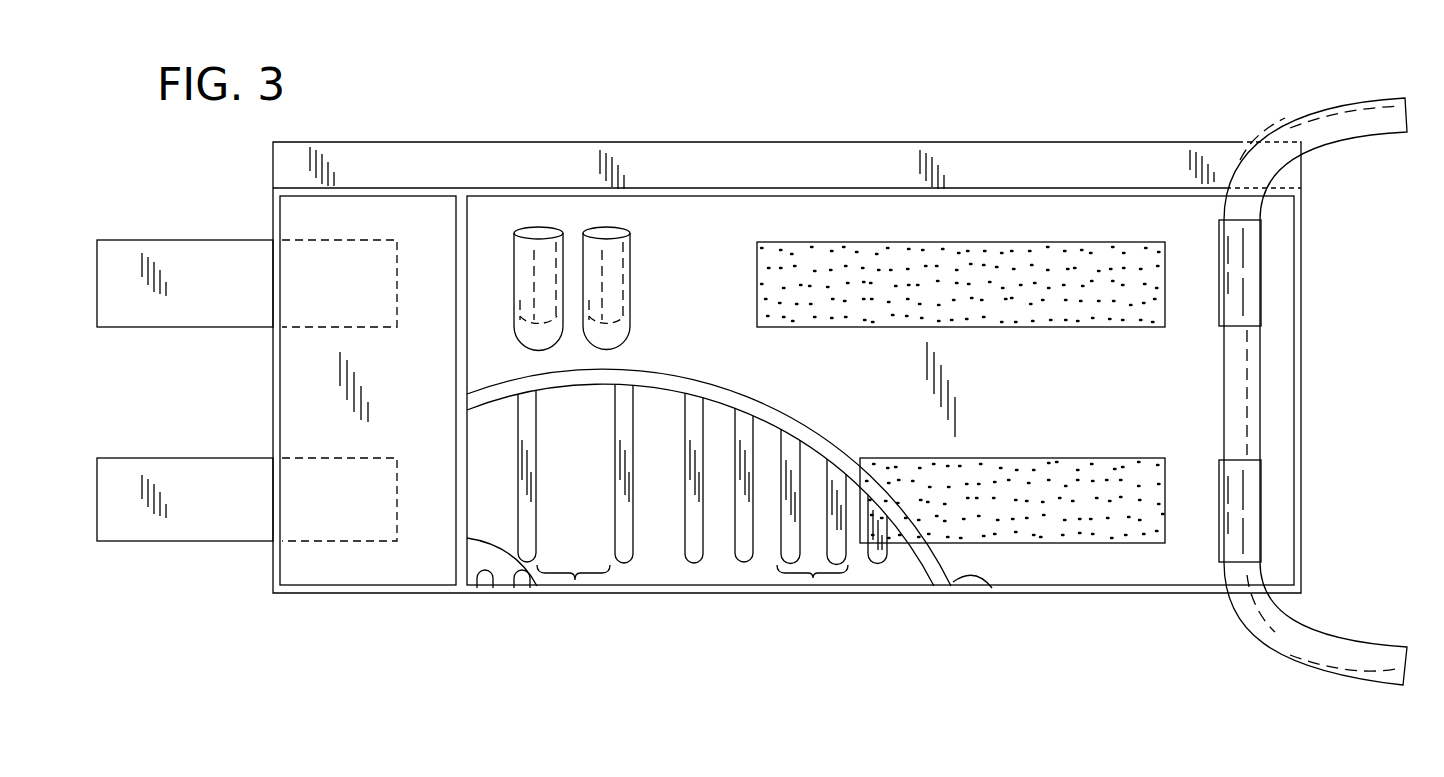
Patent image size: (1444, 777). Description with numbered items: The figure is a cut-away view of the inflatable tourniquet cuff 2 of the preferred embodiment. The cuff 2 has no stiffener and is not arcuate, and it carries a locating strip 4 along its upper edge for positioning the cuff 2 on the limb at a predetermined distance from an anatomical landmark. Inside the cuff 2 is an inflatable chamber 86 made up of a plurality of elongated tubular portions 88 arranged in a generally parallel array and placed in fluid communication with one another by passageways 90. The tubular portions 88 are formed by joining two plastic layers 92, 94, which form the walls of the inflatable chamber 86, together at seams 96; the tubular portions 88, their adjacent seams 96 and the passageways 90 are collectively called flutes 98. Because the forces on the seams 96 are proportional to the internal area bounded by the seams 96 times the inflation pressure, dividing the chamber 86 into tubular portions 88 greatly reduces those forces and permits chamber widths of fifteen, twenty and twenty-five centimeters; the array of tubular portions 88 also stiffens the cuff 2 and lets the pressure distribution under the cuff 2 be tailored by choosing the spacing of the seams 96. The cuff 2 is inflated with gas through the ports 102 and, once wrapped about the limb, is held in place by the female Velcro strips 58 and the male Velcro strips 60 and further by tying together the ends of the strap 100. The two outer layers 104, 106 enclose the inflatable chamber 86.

The inflatable tourniquet cuff 2 is at (295, 594).
The locating strip 4 is at (331, 142).
The male Velcro strips 60 is at (158, 240).
The ports 102 is at (513, 262).
The female Velcro strips 58 is at (1108, 328).
The strap 100 is at (1327, 108).
The inflatable chamber 86 is at (652, 540).
The plastic layer 92 is at (938, 582).
The plastic layer 94 is at (527, 588).
The elongated tubular portions 88 is at (575, 580).
The passageways 90 is at (745, 573).
The flutes 98 is at (813, 578).
The seams 96 is at (875, 567).
The outer layer 106 is at (480, 580).
The outer layer 104 is at (990, 588).